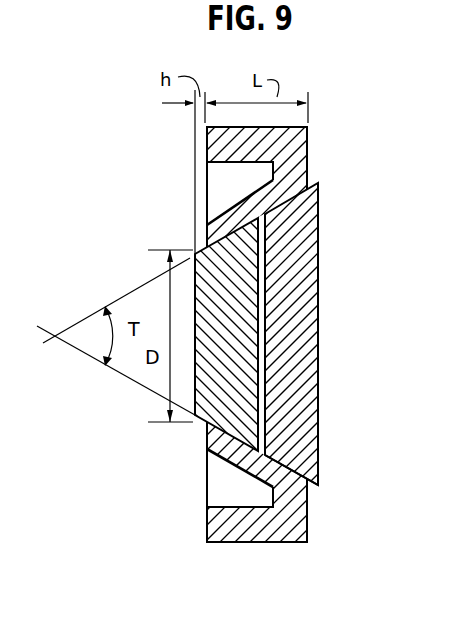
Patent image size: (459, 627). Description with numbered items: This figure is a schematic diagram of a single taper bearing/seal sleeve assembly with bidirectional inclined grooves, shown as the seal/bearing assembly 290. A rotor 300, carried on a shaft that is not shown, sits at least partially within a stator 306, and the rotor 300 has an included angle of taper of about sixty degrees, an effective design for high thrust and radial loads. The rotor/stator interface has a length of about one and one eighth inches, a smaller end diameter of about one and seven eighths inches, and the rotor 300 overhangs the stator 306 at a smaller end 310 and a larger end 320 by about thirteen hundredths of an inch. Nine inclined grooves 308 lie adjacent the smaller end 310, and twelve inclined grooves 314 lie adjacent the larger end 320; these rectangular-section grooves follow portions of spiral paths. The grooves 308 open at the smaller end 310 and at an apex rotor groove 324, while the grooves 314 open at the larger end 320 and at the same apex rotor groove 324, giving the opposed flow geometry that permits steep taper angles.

The seal/bearing assembly 290 is at (334, 169).
The stator 306 is at (282, 532).
The inclined grooves 308 is at (212, 408).
The smaller end 310 is at (196, 366).
The larger end 320 is at (319, 228).
The inclined grooves 314 is at (312, 382).
The rotor 300 is at (308, 457).
The apex rotor groove 324 is at (268, 271).